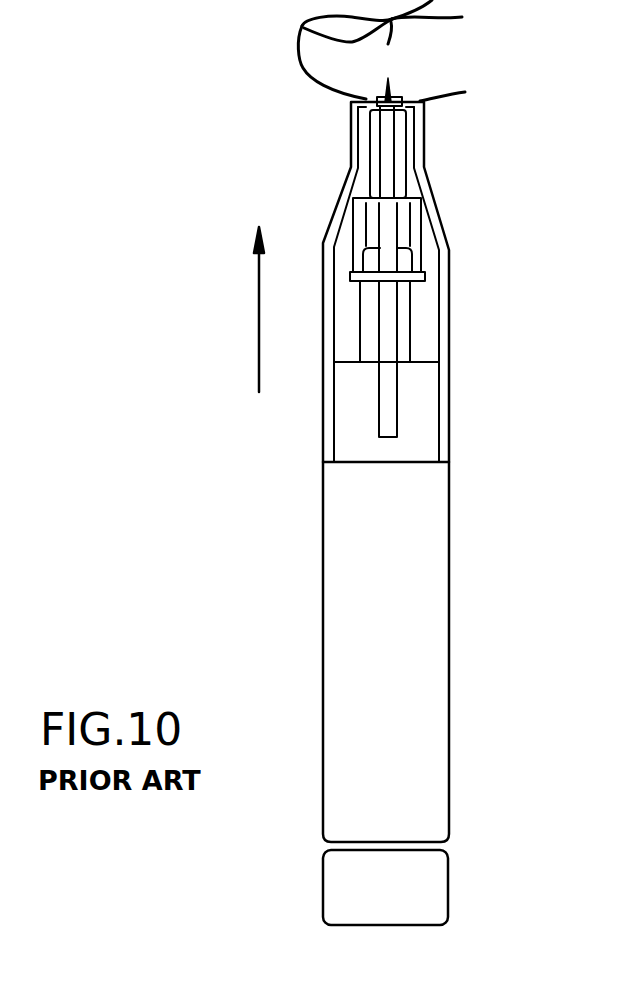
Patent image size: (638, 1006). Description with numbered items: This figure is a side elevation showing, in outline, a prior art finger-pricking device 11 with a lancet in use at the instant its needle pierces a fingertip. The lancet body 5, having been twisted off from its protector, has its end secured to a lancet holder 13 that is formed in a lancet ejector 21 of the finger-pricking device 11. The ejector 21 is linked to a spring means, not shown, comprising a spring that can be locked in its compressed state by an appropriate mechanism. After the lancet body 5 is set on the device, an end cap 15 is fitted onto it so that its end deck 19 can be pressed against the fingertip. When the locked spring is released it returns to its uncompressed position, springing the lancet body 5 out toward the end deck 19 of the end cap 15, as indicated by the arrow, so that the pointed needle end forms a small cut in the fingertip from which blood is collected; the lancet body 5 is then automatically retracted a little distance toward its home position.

The lancet body 5 is at (370, 148).
The finger-pricking device 11 is at (457, 528).
The lancet holder 13 is at (423, 240).
The end cap 15 is at (427, 143).
The end deck 19 is at (350, 102).
The lancet ejector 21 is at (403, 325).